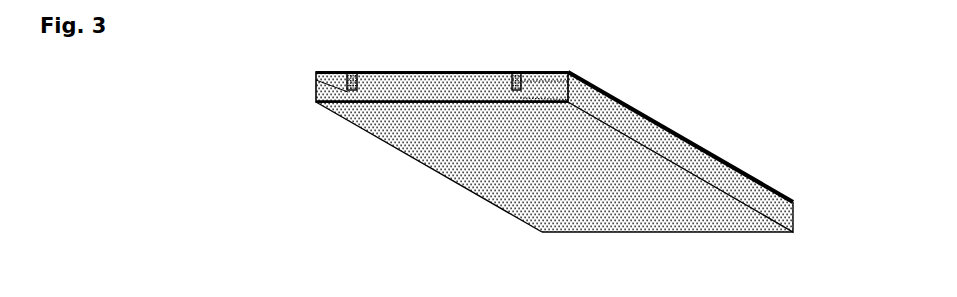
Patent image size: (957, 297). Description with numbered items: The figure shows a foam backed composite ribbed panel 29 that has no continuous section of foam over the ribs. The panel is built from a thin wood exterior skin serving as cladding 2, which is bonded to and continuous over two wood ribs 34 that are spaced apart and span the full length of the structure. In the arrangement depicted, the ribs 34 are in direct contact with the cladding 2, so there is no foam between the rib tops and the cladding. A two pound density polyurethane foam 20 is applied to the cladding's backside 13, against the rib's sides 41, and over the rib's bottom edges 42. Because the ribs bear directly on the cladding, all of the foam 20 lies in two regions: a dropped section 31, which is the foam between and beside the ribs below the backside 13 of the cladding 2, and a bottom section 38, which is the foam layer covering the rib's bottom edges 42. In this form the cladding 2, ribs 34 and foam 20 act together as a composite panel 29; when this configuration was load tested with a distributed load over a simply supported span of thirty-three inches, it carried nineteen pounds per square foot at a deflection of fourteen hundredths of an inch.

The cladding 2 is at (375, 70).
The backside 13 is at (316, 80).
The polyurethane foam 20 is at (493, 142).
The foam backed composite ribbed panel 29 is at (457, 195).
The dropped section 31 is at (487, 77).
The ribs 34 is at (528, 70).
The bottom section 38 is at (568, 100).
The rib's sides 41 is at (568, 81).
The rib's bottom edges 42 is at (316, 104).